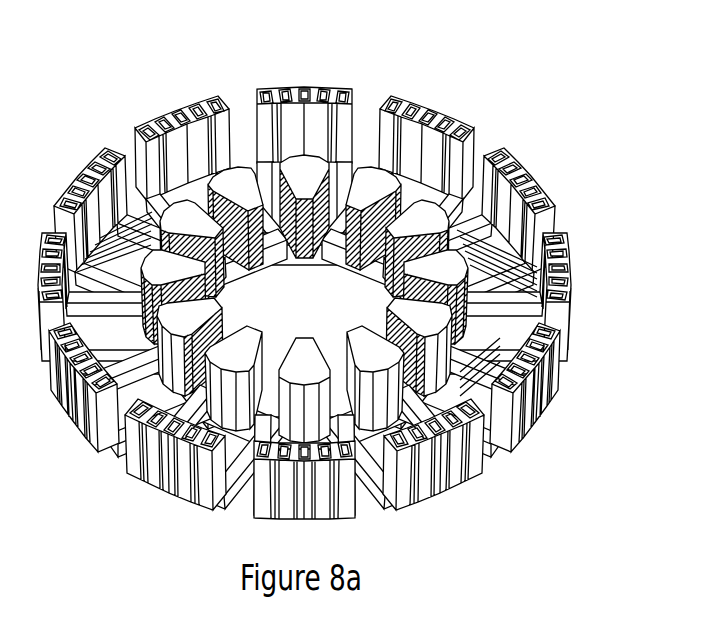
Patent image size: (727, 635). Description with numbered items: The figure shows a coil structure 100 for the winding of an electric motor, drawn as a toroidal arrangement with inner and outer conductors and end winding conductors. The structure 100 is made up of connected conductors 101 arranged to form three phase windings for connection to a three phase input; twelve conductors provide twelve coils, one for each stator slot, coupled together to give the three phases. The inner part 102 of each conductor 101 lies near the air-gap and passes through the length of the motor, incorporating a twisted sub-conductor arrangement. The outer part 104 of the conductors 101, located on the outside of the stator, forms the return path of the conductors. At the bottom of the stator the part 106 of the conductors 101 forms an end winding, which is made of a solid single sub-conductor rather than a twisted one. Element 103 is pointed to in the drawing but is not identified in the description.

The coil structure 100 is at (334, 262).
The conductors 101 is at (466, 112).
The inner part of conductors 102 is at (420, 180).
The yoke bar 103 is at (508, 294).
The outer part of conductors 104 is at (387, 88).
The bottom part of conductors 106 is at (476, 216).